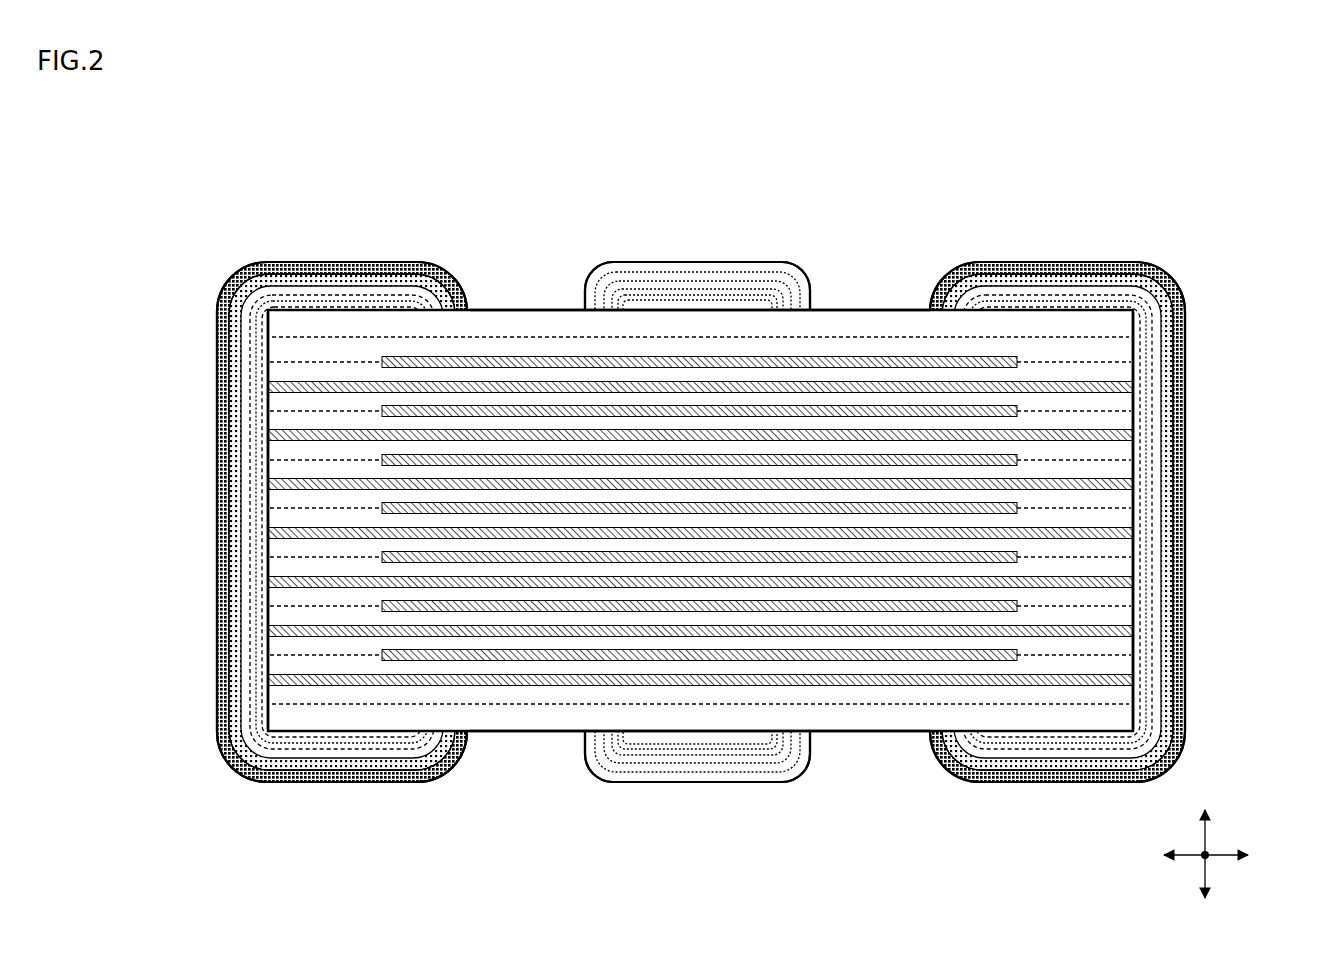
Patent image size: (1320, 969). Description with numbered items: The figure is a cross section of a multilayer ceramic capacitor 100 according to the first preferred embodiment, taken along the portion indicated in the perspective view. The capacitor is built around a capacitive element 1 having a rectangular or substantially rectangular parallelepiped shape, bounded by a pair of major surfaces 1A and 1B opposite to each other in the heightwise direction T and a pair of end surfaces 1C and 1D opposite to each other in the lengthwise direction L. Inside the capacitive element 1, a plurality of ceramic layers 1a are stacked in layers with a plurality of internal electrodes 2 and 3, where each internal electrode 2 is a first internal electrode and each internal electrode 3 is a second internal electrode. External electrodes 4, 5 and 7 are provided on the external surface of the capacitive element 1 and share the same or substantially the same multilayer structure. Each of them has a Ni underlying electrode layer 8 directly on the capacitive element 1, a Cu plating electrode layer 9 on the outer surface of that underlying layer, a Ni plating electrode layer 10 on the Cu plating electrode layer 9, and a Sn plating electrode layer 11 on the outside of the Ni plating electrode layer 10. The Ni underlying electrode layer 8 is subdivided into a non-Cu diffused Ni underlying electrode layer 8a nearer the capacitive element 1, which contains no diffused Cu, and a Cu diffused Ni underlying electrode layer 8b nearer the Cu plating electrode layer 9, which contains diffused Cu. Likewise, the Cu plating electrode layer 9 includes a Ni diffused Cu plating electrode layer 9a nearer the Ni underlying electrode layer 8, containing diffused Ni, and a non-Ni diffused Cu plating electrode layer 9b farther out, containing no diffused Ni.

The multilayer ceramic capacitor 100 is at (153, 106).
The capacitive element 1 is at (1255, 305).
The ceramic layers 1a is at (1152, 318).
The major surface 1A is at (856, 745).
The major surface 1B is at (893, 297).
The end surface 1C is at (211, 342).
The end surface 1D is at (1202, 304).
The internal electrode 2 is at (268, 387).
The internal electrode 3 is at (382, 361).
The external electrode 4 is at (430, 158).
The external electrode 5 is at (1170, 158).
The external electrode 7 is at (797, 158).
The Ni underlying electrode layer 8 is at (282, 189).
The non-Cu diffused Ni underlying electrode layer 8a is at (262, 298).
The Cu diffused Ni underlying electrode layer 8b is at (278, 294).
The Cu plating electrode layer 9 is at (345, 189).
The Ni diffused Cu plating electrode layer 9a is at (302, 289).
The non-Ni diffused Cu plating electrode layer 9b is at (327, 283).
The Ni plating electrode layer 10 is at (355, 277).
The Sn plating electrode layer 11 is at (382, 266).